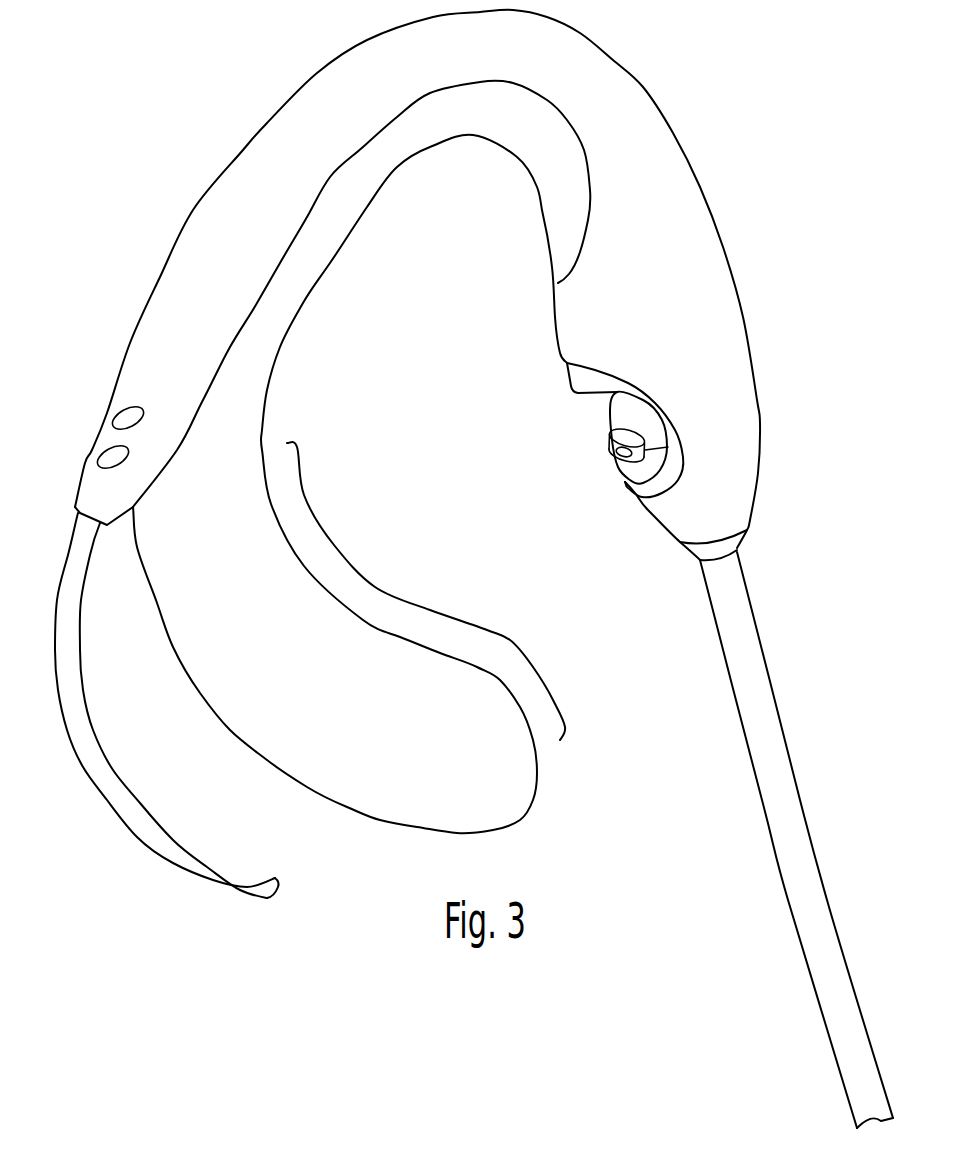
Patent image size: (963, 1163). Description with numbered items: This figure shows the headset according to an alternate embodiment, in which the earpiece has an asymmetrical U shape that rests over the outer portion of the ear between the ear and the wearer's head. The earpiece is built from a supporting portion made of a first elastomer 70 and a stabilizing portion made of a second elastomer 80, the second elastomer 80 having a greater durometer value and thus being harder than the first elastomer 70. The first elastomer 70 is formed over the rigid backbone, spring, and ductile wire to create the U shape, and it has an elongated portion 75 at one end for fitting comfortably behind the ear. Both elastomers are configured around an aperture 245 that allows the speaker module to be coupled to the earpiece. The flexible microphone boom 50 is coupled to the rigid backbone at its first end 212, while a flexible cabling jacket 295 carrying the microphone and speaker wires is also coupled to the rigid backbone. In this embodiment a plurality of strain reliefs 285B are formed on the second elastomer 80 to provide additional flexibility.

The second elastomer 80 is at (646, 87).
The first elastomer 70 is at (372, 798).
The elongated portion 75 is at (394, 589).
The flexible cabling jacket 295 is at (132, 833).
The strain reliefs 285B is at (103, 457).
The first end 212 is at (753, 422).
The aperture 245 is at (616, 452).
The flexible microphone boom 50 is at (790, 763).